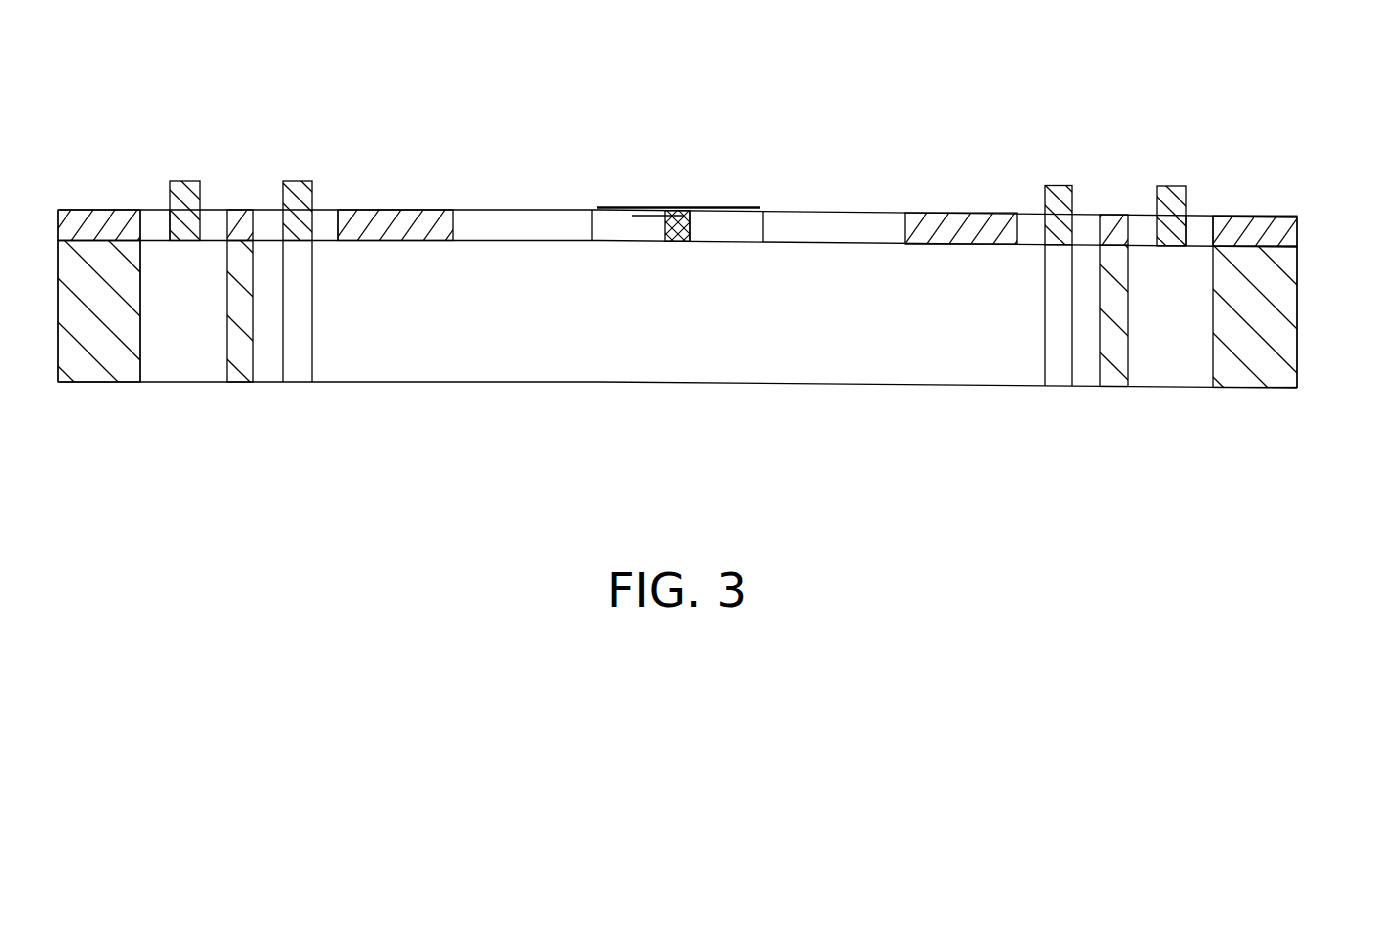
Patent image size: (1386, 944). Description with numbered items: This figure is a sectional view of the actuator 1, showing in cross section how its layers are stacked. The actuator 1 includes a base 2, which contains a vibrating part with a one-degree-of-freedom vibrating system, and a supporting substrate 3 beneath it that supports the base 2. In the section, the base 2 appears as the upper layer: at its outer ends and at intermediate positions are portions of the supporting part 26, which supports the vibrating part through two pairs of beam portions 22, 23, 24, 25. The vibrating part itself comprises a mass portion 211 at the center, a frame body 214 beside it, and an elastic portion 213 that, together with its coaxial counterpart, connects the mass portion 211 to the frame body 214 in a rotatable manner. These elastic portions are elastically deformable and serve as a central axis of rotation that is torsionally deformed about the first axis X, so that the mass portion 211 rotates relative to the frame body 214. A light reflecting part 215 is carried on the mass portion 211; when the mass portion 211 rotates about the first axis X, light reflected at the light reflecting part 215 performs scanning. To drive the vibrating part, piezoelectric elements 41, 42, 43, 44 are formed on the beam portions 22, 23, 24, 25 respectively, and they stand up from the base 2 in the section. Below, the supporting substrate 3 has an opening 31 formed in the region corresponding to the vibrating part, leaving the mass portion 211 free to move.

The actuator 1 is at (1136, 76).
The base 2 is at (1300, 232).
The supporting substrate 3 is at (1300, 322).
The beam portion 22 is at (325, 210).
The beam portion 23 is at (155, 212).
The beam portion 24 is at (1188, 218).
The beam portion 25 is at (1047, 227).
The supporting part 26 is at (86, 227).
The opening 31 is at (538, 337).
The piezoelectric element 41 is at (293, 183).
The piezoelectric element 42 is at (185, 183).
The piezoelectric element 43 is at (1168, 187).
The piezoelectric element 44 is at (1057, 187).
The mass portion 211 is at (613, 232).
The elastic portion 213 is at (680, 217).
The frame body 214 is at (427, 224).
The light reflecting part 215 is at (715, 208).
The first axis X is at (687, 243).